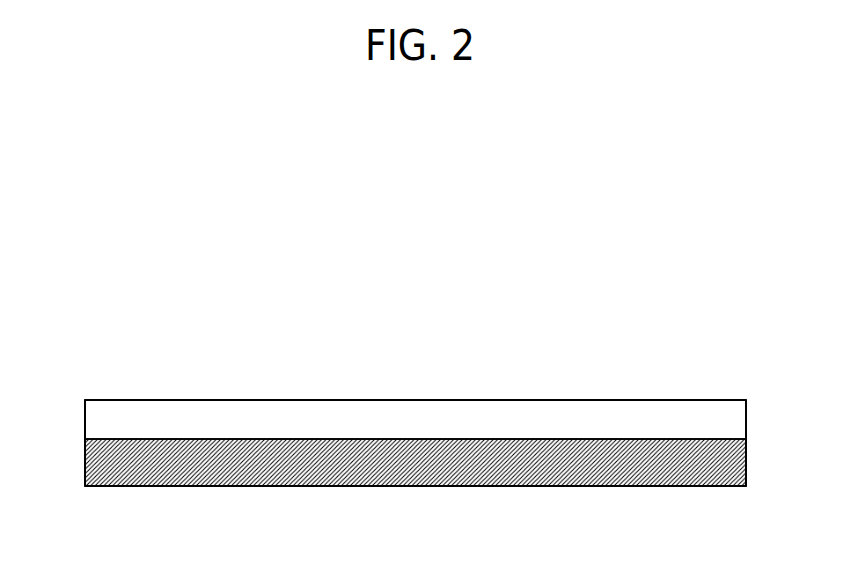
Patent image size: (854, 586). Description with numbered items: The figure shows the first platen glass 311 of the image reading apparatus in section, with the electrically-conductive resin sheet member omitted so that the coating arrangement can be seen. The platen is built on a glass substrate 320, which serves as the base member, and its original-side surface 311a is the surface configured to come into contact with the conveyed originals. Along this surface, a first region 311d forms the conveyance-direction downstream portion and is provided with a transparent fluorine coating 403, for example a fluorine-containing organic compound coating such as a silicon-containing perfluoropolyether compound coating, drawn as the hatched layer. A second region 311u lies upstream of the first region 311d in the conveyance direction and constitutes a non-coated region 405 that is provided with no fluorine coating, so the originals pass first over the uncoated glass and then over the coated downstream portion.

The first platen glass 311 is at (737, 373).
The original-side surface 311a is at (120, 422).
The second region 311u is at (415, 422).
The first region 311d is at (675, 470).
The glass substrate 320 is at (645, 398).
The fluorine coating 403 is at (100, 464).
The non-coated region 405 is at (727, 422).